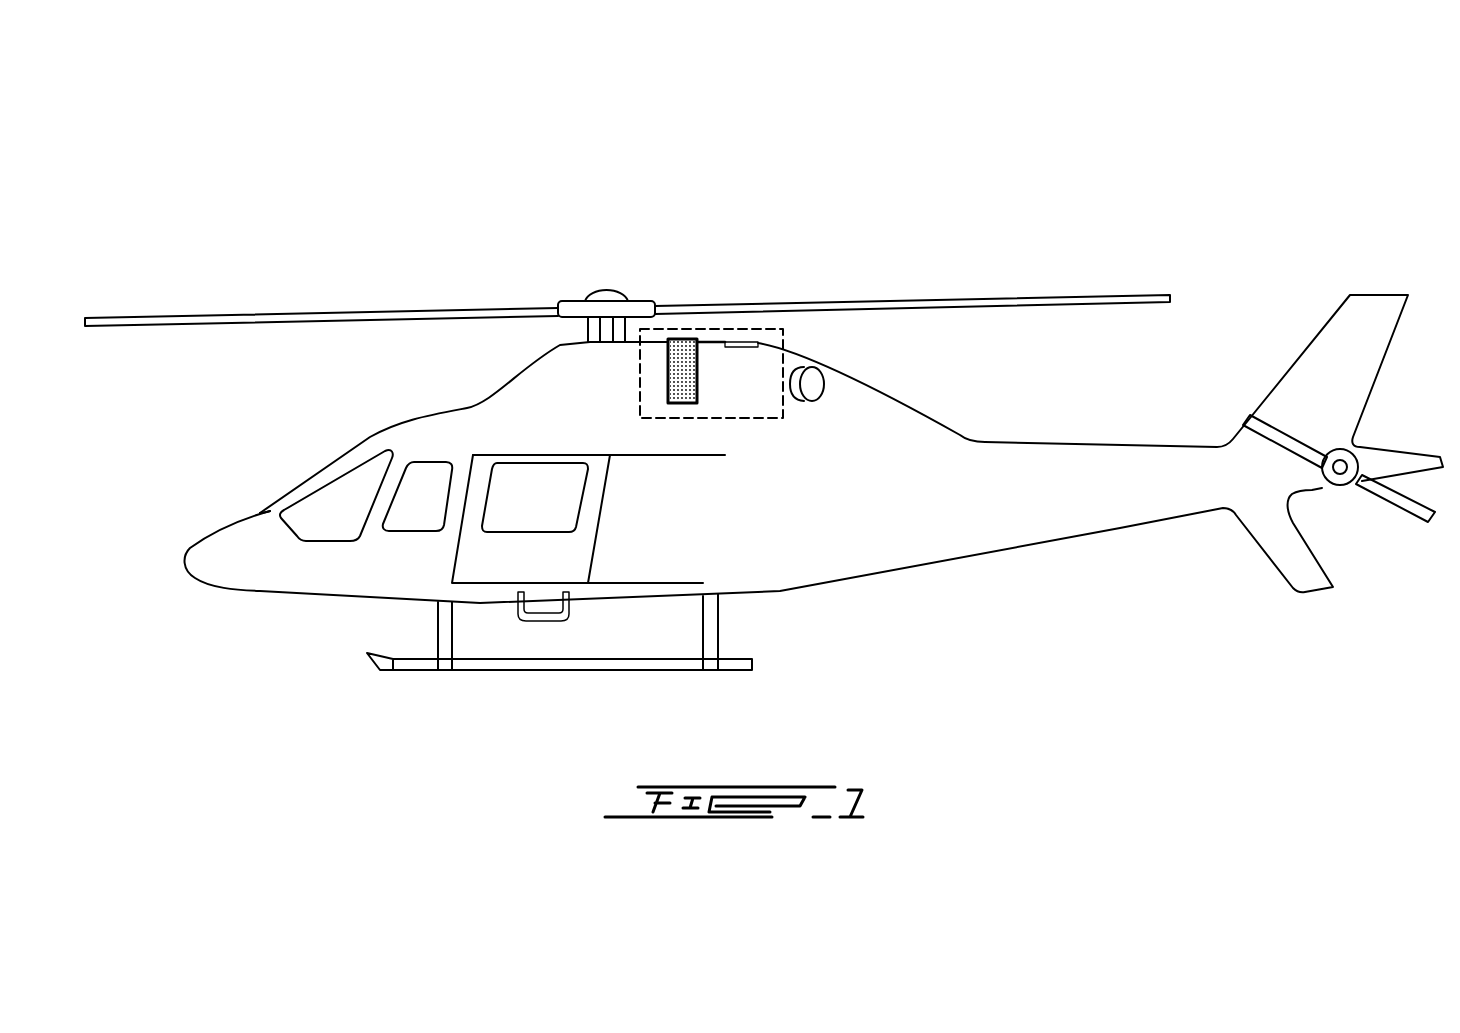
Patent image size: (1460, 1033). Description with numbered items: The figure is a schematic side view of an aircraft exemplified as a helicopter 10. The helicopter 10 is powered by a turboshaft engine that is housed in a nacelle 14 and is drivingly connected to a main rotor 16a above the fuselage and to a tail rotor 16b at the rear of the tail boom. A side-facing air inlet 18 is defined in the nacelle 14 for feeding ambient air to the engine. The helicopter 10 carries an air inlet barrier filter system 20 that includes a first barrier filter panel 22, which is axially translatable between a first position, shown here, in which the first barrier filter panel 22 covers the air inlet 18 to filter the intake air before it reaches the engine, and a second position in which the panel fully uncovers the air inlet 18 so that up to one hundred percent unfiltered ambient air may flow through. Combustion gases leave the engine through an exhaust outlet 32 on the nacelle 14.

The helicopter 10 is at (772, 392).
The nacelle 14 is at (653, 368).
The main rotor 16a is at (574, 310).
The tail rotor 16b is at (1350, 463).
The side-facing air inlet 18 is at (714, 382).
The air inlet barrier filter system 20 is at (678, 416).
The first barrier filter panel 22 is at (678, 384).
The exhaust outlet 32 is at (813, 385).